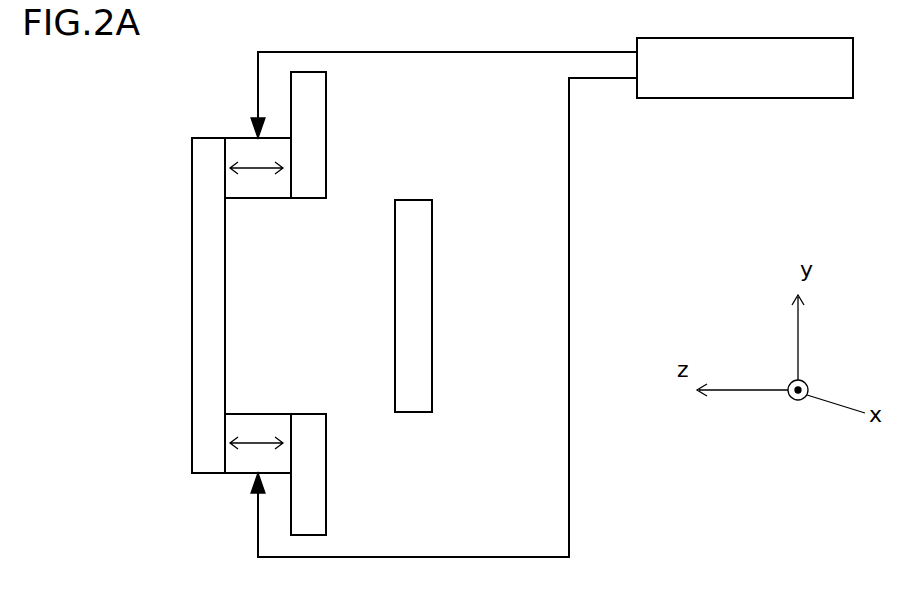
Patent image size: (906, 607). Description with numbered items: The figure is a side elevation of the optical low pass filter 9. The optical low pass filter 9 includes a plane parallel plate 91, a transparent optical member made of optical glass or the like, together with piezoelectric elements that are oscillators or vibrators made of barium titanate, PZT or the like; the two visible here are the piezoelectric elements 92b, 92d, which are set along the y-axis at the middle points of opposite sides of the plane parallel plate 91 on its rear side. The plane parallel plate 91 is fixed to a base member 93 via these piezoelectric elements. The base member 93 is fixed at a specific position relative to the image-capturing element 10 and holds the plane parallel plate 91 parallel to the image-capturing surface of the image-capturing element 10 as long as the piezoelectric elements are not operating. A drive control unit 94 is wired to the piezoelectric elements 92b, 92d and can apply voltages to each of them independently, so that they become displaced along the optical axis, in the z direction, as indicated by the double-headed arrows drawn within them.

The optical low pass filter 9 is at (270, 323).
The plane parallel plate 91 is at (203, 215).
The piezoelectric element 92b is at (242, 150).
The piezoelectric element 92d is at (240, 422).
The base member 93 is at (310, 110).
The image-capturing element 10 is at (417, 258).
The drive control unit 94 is at (763, 87).